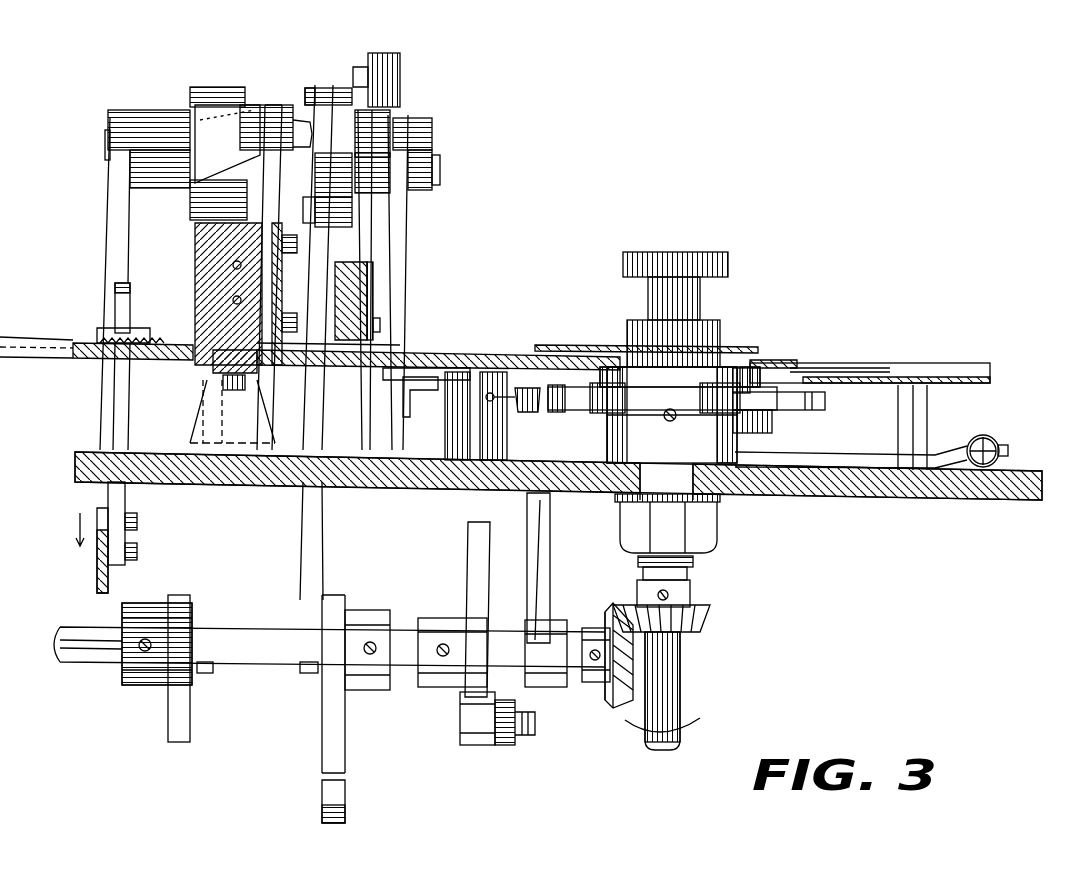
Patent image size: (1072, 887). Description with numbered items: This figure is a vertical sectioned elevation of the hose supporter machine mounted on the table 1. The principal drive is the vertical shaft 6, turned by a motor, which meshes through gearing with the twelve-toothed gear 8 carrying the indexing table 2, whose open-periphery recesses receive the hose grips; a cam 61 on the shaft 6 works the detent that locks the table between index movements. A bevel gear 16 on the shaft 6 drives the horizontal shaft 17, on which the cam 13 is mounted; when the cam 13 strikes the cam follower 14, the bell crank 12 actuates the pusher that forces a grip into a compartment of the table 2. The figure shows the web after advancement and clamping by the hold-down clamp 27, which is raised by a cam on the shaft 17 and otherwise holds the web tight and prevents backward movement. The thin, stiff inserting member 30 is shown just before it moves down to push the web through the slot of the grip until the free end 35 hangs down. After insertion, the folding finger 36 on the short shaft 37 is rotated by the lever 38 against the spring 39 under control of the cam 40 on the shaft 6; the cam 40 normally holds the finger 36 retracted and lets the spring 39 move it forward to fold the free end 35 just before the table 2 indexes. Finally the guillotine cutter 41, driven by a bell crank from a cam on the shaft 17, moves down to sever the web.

The table 1 is at (1010, 473).
The indexing table 2 is at (762, 360).
The vertical shaft 6 is at (684, 690).
The twelve-toothed gear 8 is at (550, 406).
The bell crank 12 is at (520, 676).
The cam 13 is at (467, 557).
The cam follower 14 is at (465, 720).
The bevel gear 16 is at (611, 702).
The shaft 17 is at (263, 612).
The hold-down clamp 27 is at (132, 312).
The inserting member 30 is at (372, 232).
The free end of webbing 35 is at (433, 350).
The folding finger 36 is at (383, 376).
The short shaft 37 is at (447, 386).
The lever 38 is at (826, 456).
The spring 39 is at (987, 440).
The cam 40 is at (612, 430).
The guillotine cutter 41 is at (268, 192).
The cam 61 is at (772, 425).